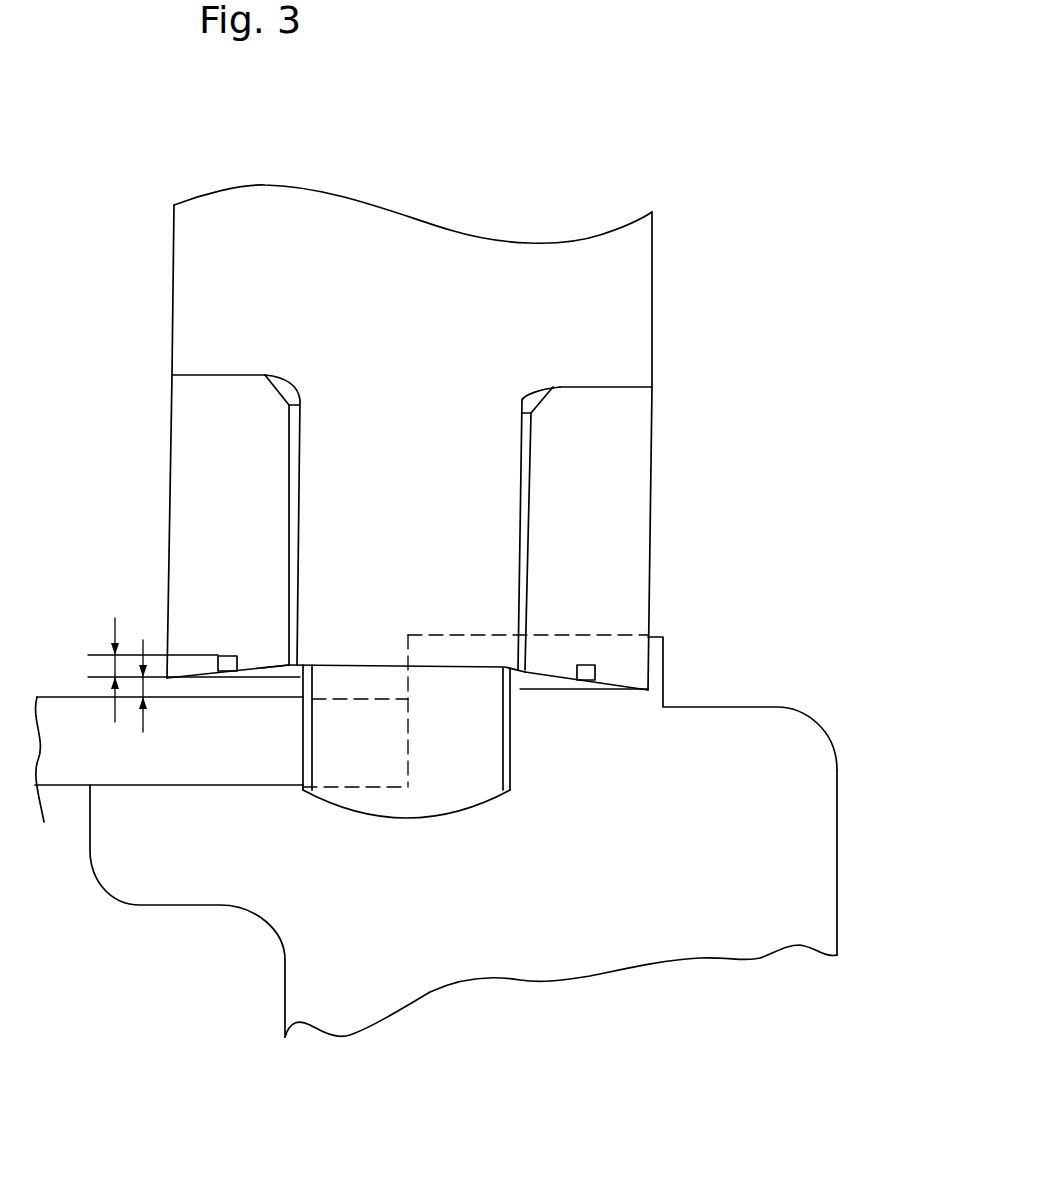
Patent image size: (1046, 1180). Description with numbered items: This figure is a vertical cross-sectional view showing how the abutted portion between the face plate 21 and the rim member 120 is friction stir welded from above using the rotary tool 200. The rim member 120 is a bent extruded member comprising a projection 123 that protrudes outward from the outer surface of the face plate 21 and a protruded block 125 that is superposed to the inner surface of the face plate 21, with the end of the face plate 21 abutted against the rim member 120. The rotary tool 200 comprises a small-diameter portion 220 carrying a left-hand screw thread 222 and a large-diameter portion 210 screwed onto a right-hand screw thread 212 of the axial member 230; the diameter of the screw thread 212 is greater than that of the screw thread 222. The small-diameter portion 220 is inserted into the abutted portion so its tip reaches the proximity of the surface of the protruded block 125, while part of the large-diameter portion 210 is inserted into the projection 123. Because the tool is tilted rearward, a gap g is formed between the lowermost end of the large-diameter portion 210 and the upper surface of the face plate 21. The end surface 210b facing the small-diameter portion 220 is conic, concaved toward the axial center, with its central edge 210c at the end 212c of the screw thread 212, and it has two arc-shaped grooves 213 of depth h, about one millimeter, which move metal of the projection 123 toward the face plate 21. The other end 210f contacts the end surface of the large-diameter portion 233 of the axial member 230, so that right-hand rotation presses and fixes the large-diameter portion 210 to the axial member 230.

The rotary tool 200 is at (583, 172).
The axial member 230 is at (391, 226).
The large-diameter portion of the axial member 233 is at (640, 290).
The large-diameter portion 210 is at (462, 559).
The other end of the large-diameter portion 210f is at (606, 388).
The central edge 210c is at (287, 664).
The end surface of the large-diameter portion 210b is at (250, 678).
The screw thread 212 is at (524, 521).
The end of the screw thread 212c is at (368, 663).
The groove 213 is at (227, 656).
The projection 123 is at (663, 661).
The rim member 120 is at (463, 842).
The protruded block 125 is at (146, 896).
The face plate 21 is at (162, 771).
The small-diameter portion 220 is at (475, 726).
The screw thread 222 is at (511, 778).
The depth of the groove h is at (185, 670).
The gap g is at (138, 701).